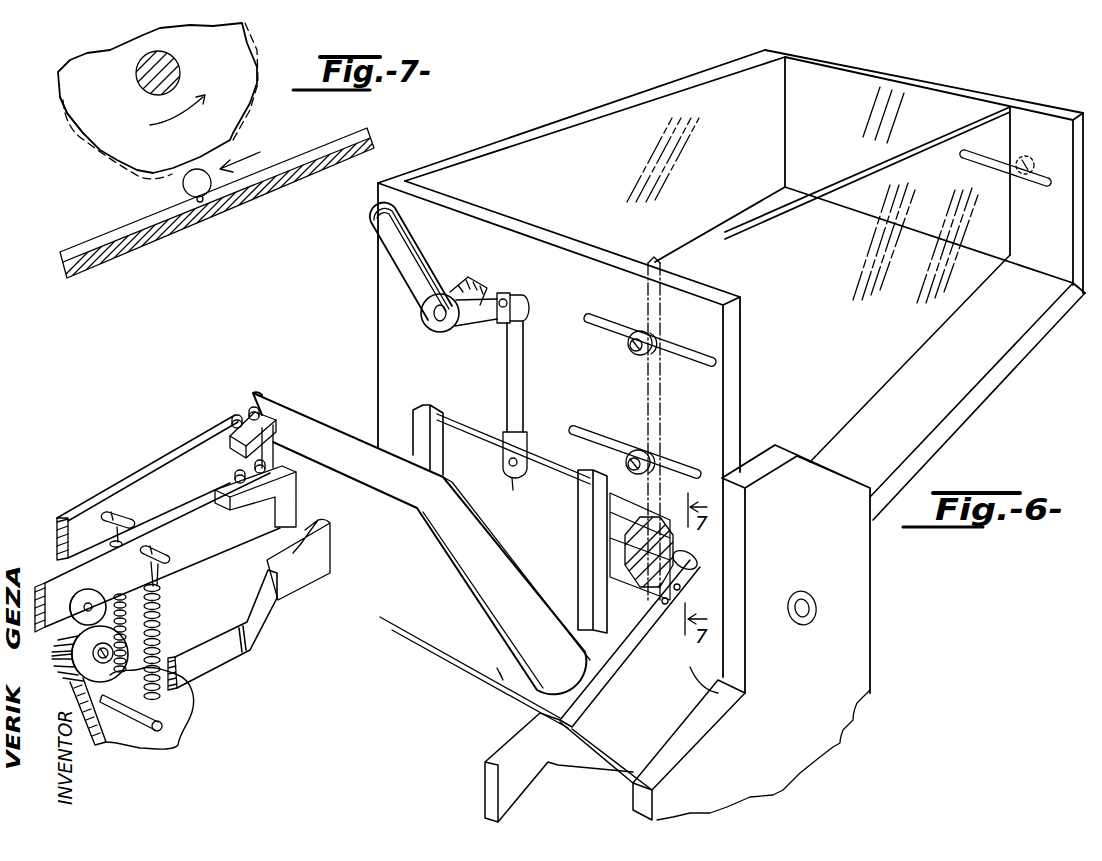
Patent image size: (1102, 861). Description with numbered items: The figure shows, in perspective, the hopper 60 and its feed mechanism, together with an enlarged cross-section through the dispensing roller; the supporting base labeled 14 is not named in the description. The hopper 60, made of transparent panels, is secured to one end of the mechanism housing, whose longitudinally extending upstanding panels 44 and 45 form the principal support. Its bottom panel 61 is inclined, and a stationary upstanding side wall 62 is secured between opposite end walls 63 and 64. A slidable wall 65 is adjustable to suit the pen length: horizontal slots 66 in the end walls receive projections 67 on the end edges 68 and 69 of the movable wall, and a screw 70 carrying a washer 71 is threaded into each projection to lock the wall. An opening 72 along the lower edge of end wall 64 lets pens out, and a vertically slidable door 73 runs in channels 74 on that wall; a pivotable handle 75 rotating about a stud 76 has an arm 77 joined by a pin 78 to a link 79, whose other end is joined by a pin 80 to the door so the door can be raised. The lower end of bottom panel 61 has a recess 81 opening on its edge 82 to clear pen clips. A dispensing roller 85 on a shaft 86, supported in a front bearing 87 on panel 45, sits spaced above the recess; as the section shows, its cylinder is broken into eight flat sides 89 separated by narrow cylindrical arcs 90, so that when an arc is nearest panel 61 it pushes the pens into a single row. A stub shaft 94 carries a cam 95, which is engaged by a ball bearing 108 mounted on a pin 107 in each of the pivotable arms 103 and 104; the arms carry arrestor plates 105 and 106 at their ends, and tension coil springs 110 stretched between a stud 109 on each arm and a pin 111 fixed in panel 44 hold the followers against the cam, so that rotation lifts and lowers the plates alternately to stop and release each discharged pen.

In FIG. 6, the frame 14 is at (347, 812).
In FIG. 6, the upstanding panel 44 is at (130, 745).
In FIG. 6, the upstanding panel 45 is at (808, 697).
In FIG. 6, the hopper 60 is at (731, 365).
In FIG. 7, the bottom panel 61 is at (327, 143).
In FIG. 6, the bottom panel 61 is at (960, 375).
In FIG. 6, the stationary upstanding side wall 62 is at (695, 103).
In FIG. 6, the end wall 63 is at (843, 85).
In FIG. 6, the end wall 64 is at (490, 240).
In FIG. 6, the slidable wall 65 is at (952, 152).
In FIG. 6, the horizontal slots 66 is at (1040, 185).
In FIG. 6, the projections 67 is at (1036, 180).
In FIG. 6, the end edge 68 is at (1020, 133).
In FIG. 6, the end edge 69 is at (662, 395).
In FIG. 6, the screw 70 is at (634, 332).
In FIG. 6, the washer 71 is at (656, 338).
In FIG. 6, the opening 72 is at (565, 590).
In FIG. 6, the vertically slidable door 73 is at (478, 467).
In FIG. 6, the channels 74 is at (440, 400).
In FIG. 6, the pivotable handle 75 is at (382, 225).
In FIG. 6, the stud 76 is at (434, 313).
In FIG. 6, the arm 77 is at (482, 322).
In FIG. 6, the pin 78 is at (505, 295).
In FIG. 6, the link 79 is at (526, 368).
In FIG. 6, the pin 80 is at (514, 478).
In FIG. 6, the recess 81 is at (455, 655).
In FIG. 6, the edge 82 is at (515, 690).
In FIG. 7, the dispensing roller 85 is at (228, 57).
In FIG. 6, the dispensing roller 85 is at (630, 588).
In FIG. 7, the shaft 86 is at (153, 58).
In FIG. 6, the shaft 86 is at (820, 612).
In FIG. 6, the front bearing 87 is at (818, 598).
In FIG. 7, the flat sides 89 is at (68, 112).
In FIG. 7, the cylindrical arc 90 is at (258, 68).
In FIG. 6, the stub shaft 94 is at (99, 665).
In FIG. 6, the cam 95 is at (56, 655).
In FIG. 6, the pivotable arm 103 is at (188, 499).
In FIG. 6, the pivotable arm 104 is at (215, 543).
In FIG. 6, the arrestor plate 105 is at (528, 602).
In FIG. 6, the arrestor plate 106 is at (445, 605).
In FIG. 6, the pin 107 is at (74, 612).
In FIG. 6, the ball bearing 108 is at (95, 600).
In FIG. 6, the stud 109 is at (128, 518).
In FIG. 6, the tension coil spring 110 is at (163, 622).
In FIG. 6, the pin 111 is at (165, 724).